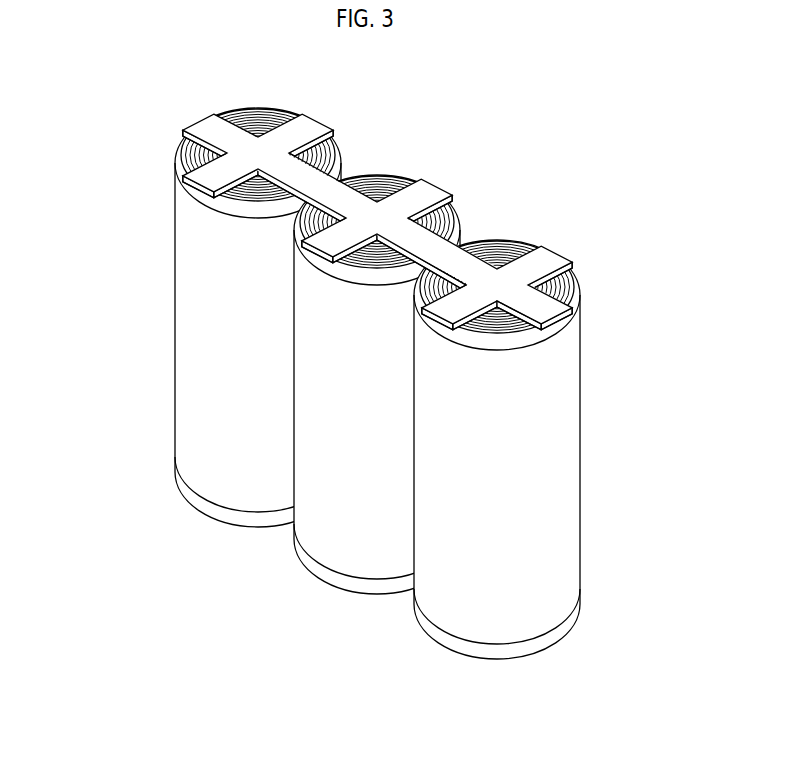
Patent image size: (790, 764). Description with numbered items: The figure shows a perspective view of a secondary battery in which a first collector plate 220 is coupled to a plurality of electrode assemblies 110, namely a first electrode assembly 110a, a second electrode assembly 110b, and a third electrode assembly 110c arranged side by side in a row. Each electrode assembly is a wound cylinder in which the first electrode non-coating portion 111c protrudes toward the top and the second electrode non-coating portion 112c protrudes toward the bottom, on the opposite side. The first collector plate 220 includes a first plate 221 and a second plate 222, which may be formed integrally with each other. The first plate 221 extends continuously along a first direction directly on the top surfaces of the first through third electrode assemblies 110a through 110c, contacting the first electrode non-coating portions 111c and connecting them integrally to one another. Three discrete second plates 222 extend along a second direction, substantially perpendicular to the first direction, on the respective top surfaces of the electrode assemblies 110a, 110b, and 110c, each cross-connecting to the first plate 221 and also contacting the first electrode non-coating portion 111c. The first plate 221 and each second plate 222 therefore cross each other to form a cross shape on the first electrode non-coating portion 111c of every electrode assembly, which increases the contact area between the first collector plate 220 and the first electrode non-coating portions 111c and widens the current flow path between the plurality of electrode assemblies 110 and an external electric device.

The electrode assemblies 110 is at (393, 418).
The first electrode assembly 110a is at (218, 496).
The second electrode assembly 110b is at (333, 552).
The third electrode assembly 110c is at (547, 479).
The first electrode non-coating portion 111c is at (547, 333).
The second electrode non-coating portion 112c is at (570, 630).
The first collector plate 220 is at (299, 217).
The first plate 221 is at (214, 114).
The second plate 222 is at (202, 178).